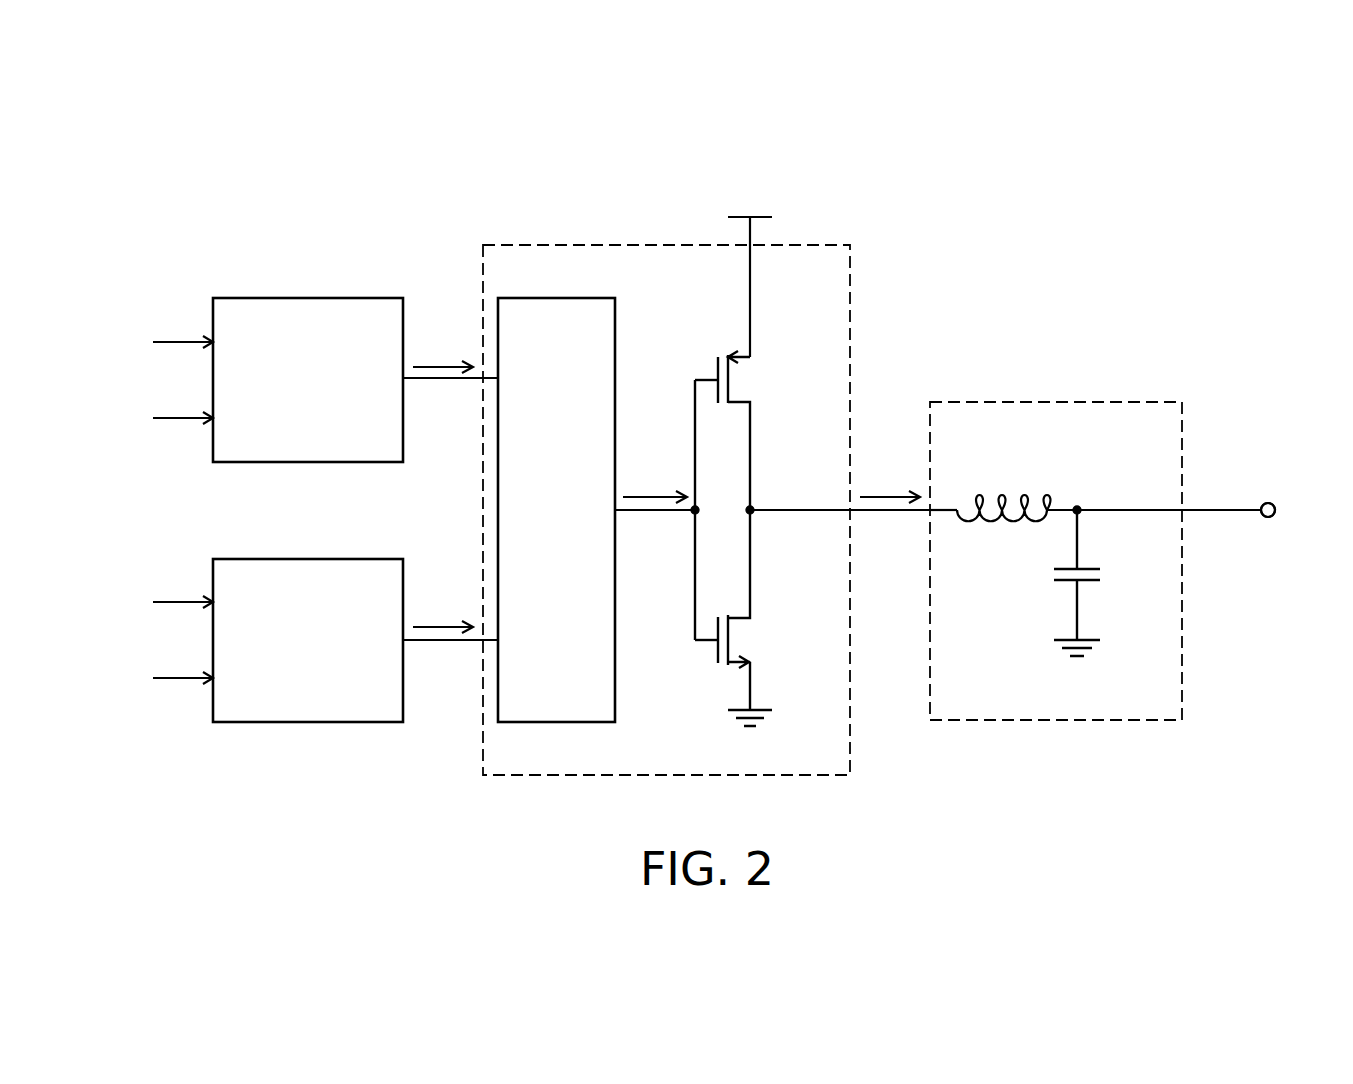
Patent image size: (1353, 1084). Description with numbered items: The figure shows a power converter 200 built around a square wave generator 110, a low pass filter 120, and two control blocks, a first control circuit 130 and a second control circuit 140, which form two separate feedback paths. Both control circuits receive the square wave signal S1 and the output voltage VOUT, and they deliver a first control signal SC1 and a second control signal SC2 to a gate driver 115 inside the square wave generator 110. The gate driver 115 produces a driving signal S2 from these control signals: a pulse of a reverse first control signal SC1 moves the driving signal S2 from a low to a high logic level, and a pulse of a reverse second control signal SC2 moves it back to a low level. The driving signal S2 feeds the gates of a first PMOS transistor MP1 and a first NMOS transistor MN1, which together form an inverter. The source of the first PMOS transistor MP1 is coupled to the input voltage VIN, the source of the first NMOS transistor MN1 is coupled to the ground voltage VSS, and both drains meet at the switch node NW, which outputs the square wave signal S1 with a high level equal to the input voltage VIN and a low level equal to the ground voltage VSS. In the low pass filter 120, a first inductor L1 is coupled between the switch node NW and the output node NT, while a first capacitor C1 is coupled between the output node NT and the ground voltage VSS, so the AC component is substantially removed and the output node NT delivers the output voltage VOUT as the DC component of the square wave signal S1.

The power converter 200 is at (692, 138).
The square wave generator 110 is at (483, 247).
The gate driver 115 is at (498, 300).
The low pass filter 120 is at (930, 404).
The first control circuit 130 is at (213, 300).
The second control circuit 140 is at (213, 561).
The first PMOS transistor MP1 is at (742, 382).
The first NMOS transistor MN1 is at (742, 645).
The first inductor L1 is at (994, 500).
The first capacitor C1 is at (1102, 576).
The switch node NW is at (754, 514).
The output node NT is at (1268, 518).
The square wave signal S1 is at (183, 338).
The driving signal S2 is at (655, 494).
The first control signal SC1 is at (441, 364).
The second control signal SC2 is at (441, 624).
The input voltage VIN is at (750, 267).
The output voltage VOUT is at (183, 421).
The ground voltage VSS is at (914, 703).